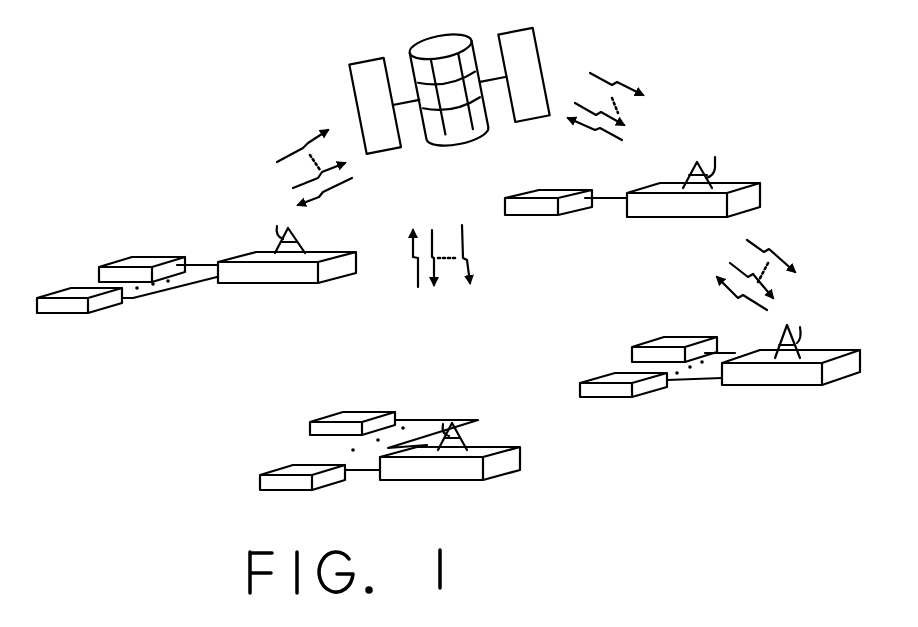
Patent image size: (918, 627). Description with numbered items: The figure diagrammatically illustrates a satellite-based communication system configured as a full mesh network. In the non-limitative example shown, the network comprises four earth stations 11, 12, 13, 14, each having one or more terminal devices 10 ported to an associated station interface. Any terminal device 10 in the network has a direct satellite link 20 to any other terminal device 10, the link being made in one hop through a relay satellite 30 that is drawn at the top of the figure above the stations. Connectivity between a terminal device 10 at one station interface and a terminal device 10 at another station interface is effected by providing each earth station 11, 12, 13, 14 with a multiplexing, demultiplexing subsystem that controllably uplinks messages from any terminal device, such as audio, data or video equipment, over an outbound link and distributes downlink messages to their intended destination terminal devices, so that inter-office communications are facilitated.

The terminal device 10 is at (120, 257).
The earth station 11 is at (345, 278).
The earth station 12 is at (663, 219).
The earth station 13 is at (787, 386).
The earth station 14 is at (507, 474).
The direct satellite link 20 is at (300, 146).
The relay satellite 30 is at (538, 54).